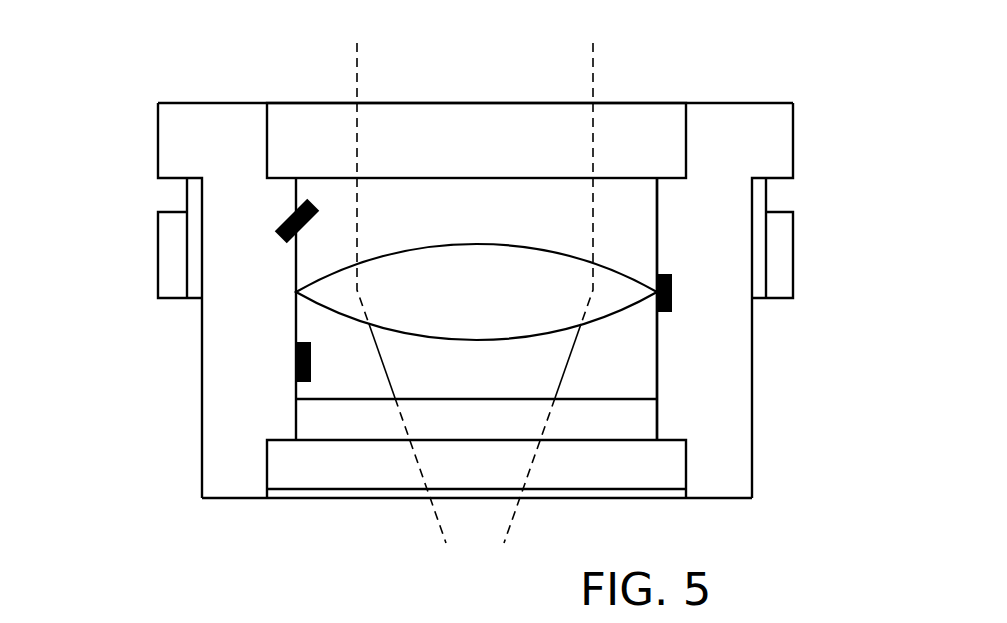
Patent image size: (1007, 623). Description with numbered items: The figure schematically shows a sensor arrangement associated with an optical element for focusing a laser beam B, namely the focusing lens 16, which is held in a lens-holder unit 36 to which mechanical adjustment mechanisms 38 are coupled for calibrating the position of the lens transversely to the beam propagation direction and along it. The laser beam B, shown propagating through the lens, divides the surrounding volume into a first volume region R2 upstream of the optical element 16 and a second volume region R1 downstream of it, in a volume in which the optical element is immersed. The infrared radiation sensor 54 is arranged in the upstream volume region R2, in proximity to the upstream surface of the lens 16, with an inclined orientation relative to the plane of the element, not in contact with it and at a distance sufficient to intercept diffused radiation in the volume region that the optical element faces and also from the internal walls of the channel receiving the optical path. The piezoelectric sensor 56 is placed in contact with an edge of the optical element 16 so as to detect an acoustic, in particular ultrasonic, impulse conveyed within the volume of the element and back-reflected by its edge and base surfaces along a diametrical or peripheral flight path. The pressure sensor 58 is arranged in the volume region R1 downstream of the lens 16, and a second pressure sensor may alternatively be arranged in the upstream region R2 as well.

The optical focusing system 16 is at (620, 285).
The lens-holder unit 36 is at (172, 143).
The mechanical adjustment mechanisms 38 is at (787, 250).
The infrared radiation sensor 54 is at (290, 218).
The piezoelectric sensor 56 is at (673, 302).
The pressure sensor 58 is at (295, 355).
The laser beam B is at (375, 218).
The second volume region R1 is at (645, 372).
The first volume region R2 is at (647, 216).